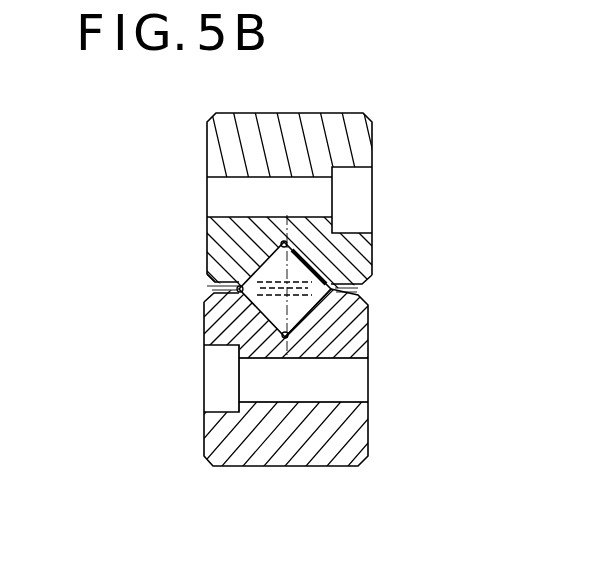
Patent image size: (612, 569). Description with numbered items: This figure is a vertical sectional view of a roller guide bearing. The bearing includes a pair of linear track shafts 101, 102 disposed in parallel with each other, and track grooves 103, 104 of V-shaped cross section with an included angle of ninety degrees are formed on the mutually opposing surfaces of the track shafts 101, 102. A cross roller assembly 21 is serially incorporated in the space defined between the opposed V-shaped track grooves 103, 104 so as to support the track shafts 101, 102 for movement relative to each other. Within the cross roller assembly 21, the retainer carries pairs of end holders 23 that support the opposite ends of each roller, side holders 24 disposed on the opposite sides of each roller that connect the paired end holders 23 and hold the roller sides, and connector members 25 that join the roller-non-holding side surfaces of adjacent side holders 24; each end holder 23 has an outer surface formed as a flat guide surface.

The linear track shaft 101 is at (353, 142).
The linear track shaft 102 is at (353, 432).
The track groove 103 is at (236, 262).
The track groove 104 is at (287, 355).
The cross roller assembly 21 is at (332, 261).
The end holder 23 is at (270, 252).
The side holder 24 is at (297, 309).
The connector member 25 is at (328, 270).